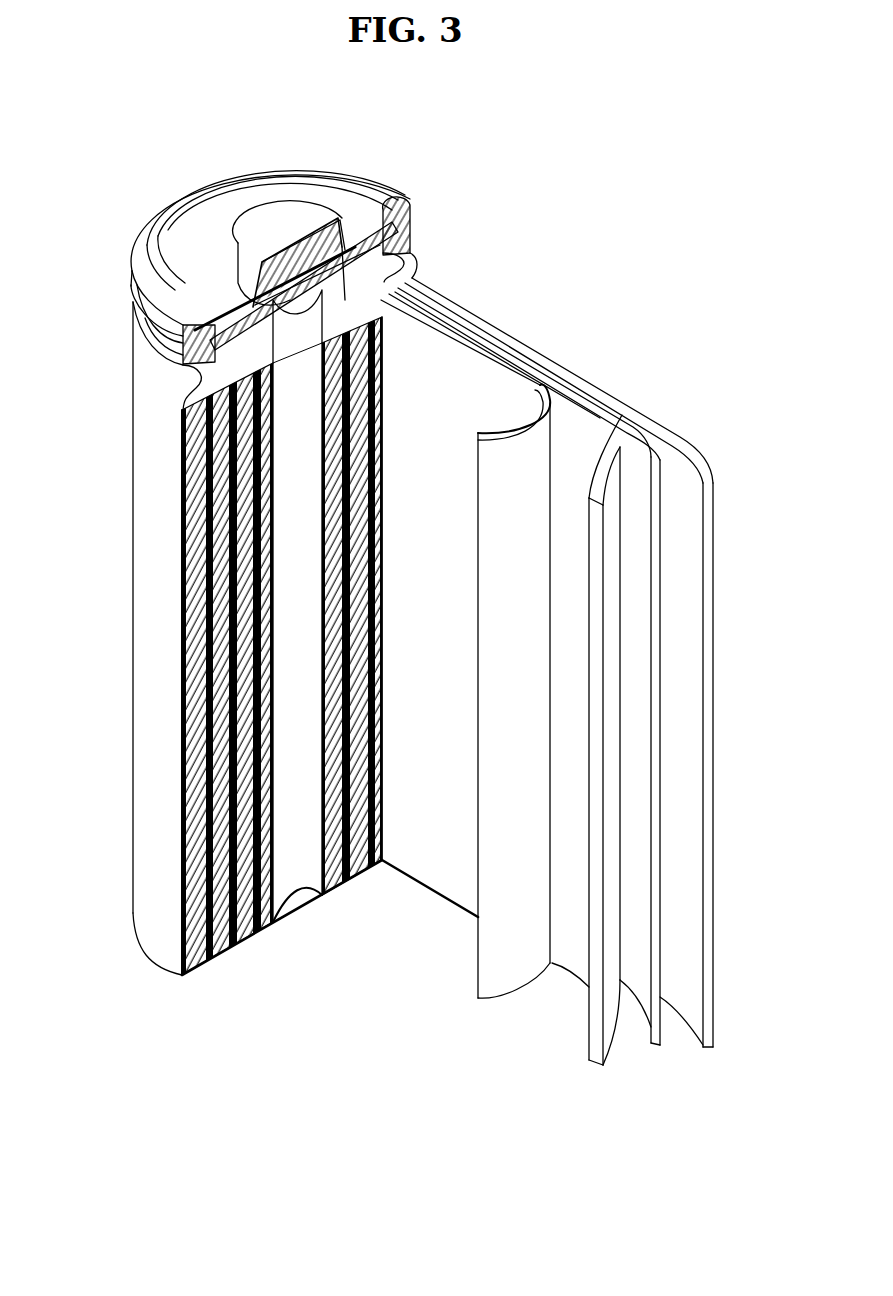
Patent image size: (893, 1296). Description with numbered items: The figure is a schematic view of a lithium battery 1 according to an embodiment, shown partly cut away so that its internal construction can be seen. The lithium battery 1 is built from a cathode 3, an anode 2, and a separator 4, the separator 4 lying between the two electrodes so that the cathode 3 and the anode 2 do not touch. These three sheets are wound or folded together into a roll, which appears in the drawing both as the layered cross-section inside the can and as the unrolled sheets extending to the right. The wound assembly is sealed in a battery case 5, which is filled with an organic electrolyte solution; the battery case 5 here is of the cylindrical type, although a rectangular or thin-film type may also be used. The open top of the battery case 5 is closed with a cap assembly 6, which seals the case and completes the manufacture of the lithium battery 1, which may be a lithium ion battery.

The lithium battery 1 is at (570, 199).
The anode 2 is at (690, 450).
The cathode 3 is at (608, 443).
The separator 4 is at (513, 437).
The battery case 5 is at (138, 626).
The cap assembly 6 is at (265, 225).